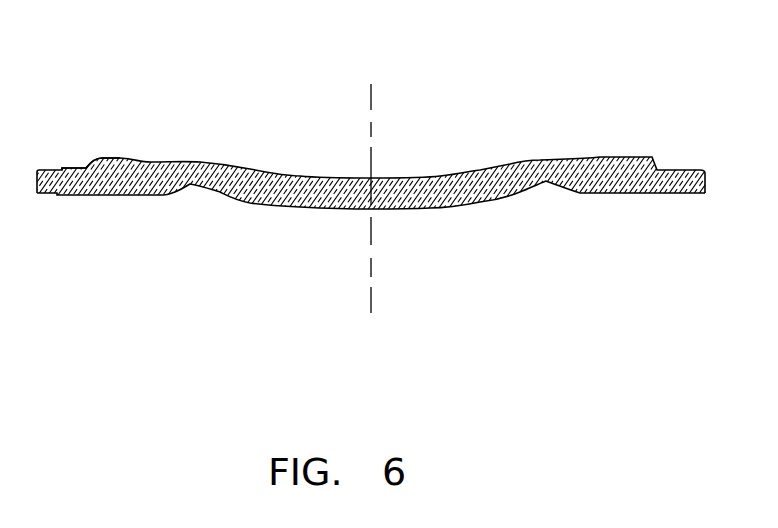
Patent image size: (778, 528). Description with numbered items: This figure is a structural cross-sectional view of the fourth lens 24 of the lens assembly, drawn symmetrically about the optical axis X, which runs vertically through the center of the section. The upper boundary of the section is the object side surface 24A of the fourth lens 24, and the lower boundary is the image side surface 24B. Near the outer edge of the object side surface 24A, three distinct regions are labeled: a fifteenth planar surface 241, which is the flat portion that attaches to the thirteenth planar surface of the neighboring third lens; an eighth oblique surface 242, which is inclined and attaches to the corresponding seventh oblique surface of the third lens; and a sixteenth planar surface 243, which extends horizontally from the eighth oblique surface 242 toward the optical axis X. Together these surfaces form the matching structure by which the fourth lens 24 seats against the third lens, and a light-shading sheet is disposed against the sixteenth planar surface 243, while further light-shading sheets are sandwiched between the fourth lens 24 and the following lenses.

The fourth lens 24 is at (675, 43).
The object side surface of the fourth lens 24A is at (288, 174).
The image side surface of the fourth lens 24B is at (432, 211).
The fifteenth planar surface 241 is at (71, 166).
The eighth oblique surface 242 is at (85, 163).
The sixteenth planar surface 243 is at (100, 159).
The optical axis X is at (371, 245).